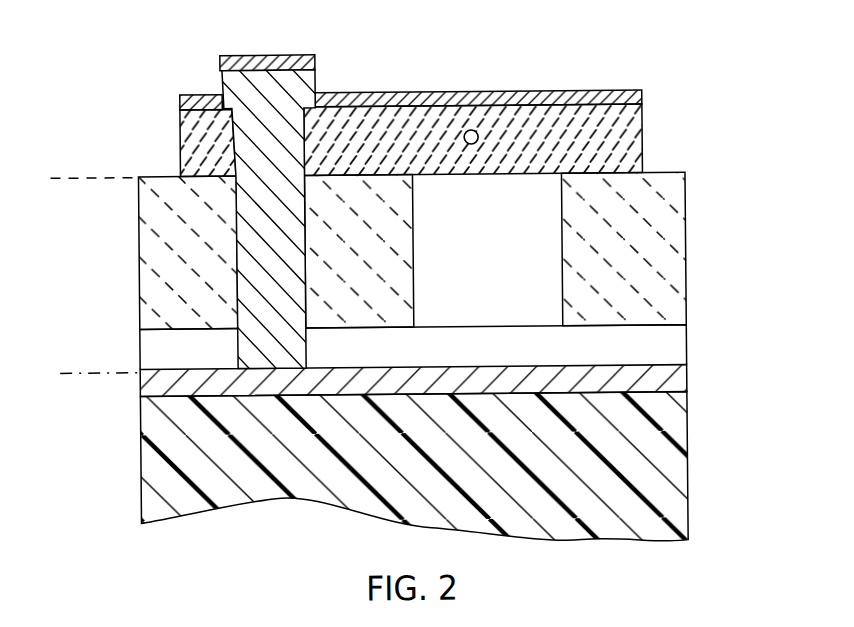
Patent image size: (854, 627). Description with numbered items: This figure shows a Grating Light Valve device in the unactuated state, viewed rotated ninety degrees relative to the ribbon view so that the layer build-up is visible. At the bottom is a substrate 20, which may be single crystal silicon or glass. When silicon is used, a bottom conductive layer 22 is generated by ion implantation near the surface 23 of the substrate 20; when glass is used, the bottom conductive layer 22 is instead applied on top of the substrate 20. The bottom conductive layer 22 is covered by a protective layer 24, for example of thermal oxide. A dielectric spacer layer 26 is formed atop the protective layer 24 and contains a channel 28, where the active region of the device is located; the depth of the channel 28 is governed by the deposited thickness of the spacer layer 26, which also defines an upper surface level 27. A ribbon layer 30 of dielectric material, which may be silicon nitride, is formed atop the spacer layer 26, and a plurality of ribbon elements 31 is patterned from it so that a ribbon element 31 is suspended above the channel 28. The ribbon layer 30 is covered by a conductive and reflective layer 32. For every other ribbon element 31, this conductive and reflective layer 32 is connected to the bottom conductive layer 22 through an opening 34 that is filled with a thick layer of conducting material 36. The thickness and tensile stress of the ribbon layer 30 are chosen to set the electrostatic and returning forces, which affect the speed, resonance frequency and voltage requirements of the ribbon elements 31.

The substrate 20 is at (680, 467).
The bottom conductive layer 22 is at (680, 379).
The surface of the substrate 23 is at (72, 370).
The protective layer 24 is at (680, 344).
The dielectric spacer layer 26 is at (683, 214).
The upper surface level 27 is at (92, 175).
The channel 28 is at (506, 250).
The ribbon layer 30 is at (639, 139).
The ribbon element 31 is at (469, 131).
The conductive and reflective layer 32 is at (609, 95).
The opening 34 is at (235, 156).
The conducting material 36 is at (232, 81).